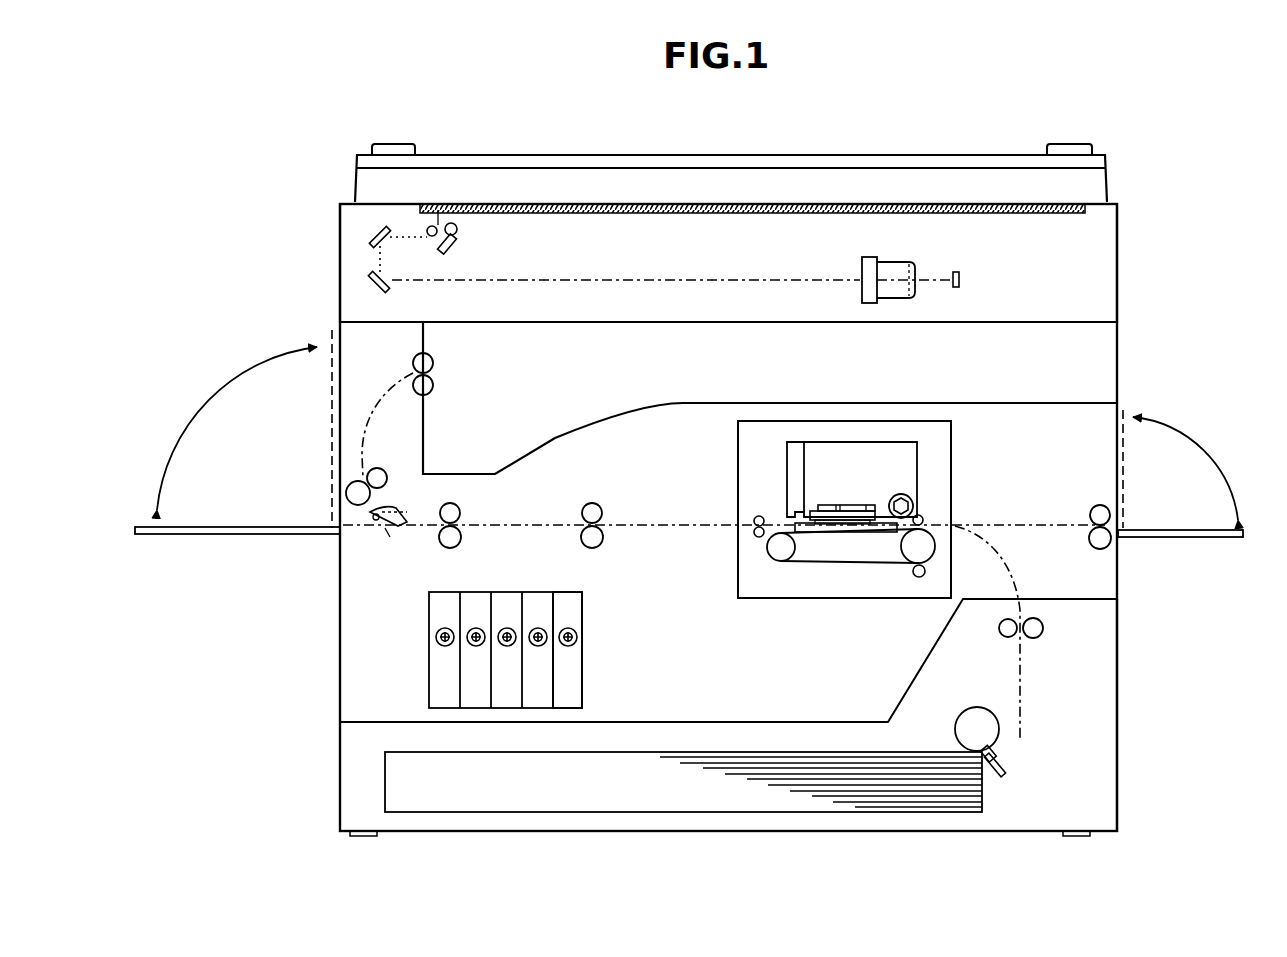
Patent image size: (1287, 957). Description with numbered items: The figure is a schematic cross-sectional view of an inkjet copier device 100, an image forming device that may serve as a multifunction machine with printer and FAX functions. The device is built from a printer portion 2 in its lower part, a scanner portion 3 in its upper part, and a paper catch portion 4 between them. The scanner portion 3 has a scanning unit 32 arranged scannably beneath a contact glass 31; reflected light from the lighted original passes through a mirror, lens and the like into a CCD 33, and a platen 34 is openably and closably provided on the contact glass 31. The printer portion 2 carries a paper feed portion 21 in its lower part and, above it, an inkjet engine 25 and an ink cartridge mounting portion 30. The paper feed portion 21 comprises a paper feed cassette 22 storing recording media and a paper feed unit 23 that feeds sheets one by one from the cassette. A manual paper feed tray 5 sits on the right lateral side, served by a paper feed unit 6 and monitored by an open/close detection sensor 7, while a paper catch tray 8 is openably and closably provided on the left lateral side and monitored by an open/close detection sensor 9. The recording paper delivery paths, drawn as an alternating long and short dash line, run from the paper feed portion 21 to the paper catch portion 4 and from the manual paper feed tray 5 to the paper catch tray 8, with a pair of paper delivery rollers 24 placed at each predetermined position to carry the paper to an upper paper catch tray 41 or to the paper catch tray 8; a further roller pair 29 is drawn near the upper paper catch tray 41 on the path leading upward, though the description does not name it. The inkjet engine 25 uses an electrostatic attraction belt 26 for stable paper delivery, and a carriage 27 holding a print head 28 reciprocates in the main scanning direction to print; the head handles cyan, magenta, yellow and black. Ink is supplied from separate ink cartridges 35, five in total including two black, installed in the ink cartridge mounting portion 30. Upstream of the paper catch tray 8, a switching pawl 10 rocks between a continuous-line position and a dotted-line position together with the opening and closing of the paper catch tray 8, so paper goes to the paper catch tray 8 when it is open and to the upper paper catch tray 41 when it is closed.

The inkjet copier device 100 is at (925, 117).
The printer portion 2 is at (1133, 619).
The scanner portion 3 is at (1095, 262).
The paper catch portion 4 is at (1095, 369).
The manual paper feed tray 5 is at (1184, 537).
The paper feed unit 6 is at (1090, 544).
The open/close detection sensor 7 is at (1112, 433).
The paper catch tray 8 is at (216, 542).
The open/close detection sensor 9 is at (345, 344).
The switching pawl 10 is at (378, 524).
The paper feed portion 21 is at (1105, 716).
The paper feed cassette 22 is at (548, 812).
The paper feed unit 23 is at (956, 730).
The pair of paper delivery rollers 24 is at (382, 478).
The inkjet engine 25 is at (952, 468).
The electrostatic attraction belt 26 is at (853, 562).
The carriage 27 is at (786, 472).
The print head 28 is at (859, 504).
The feed roller pair 29 is at (436, 365).
The ink cartridge mounting portion 30 is at (428, 649).
The contact glass 31 is at (767, 213).
The scanning unit 32 is at (470, 262).
The CCD 33 is at (966, 281).
The platen 34 is at (601, 182).
The ink cartridges 35 is at (577, 661).
The upper paper catch tray 41 is at (770, 403).